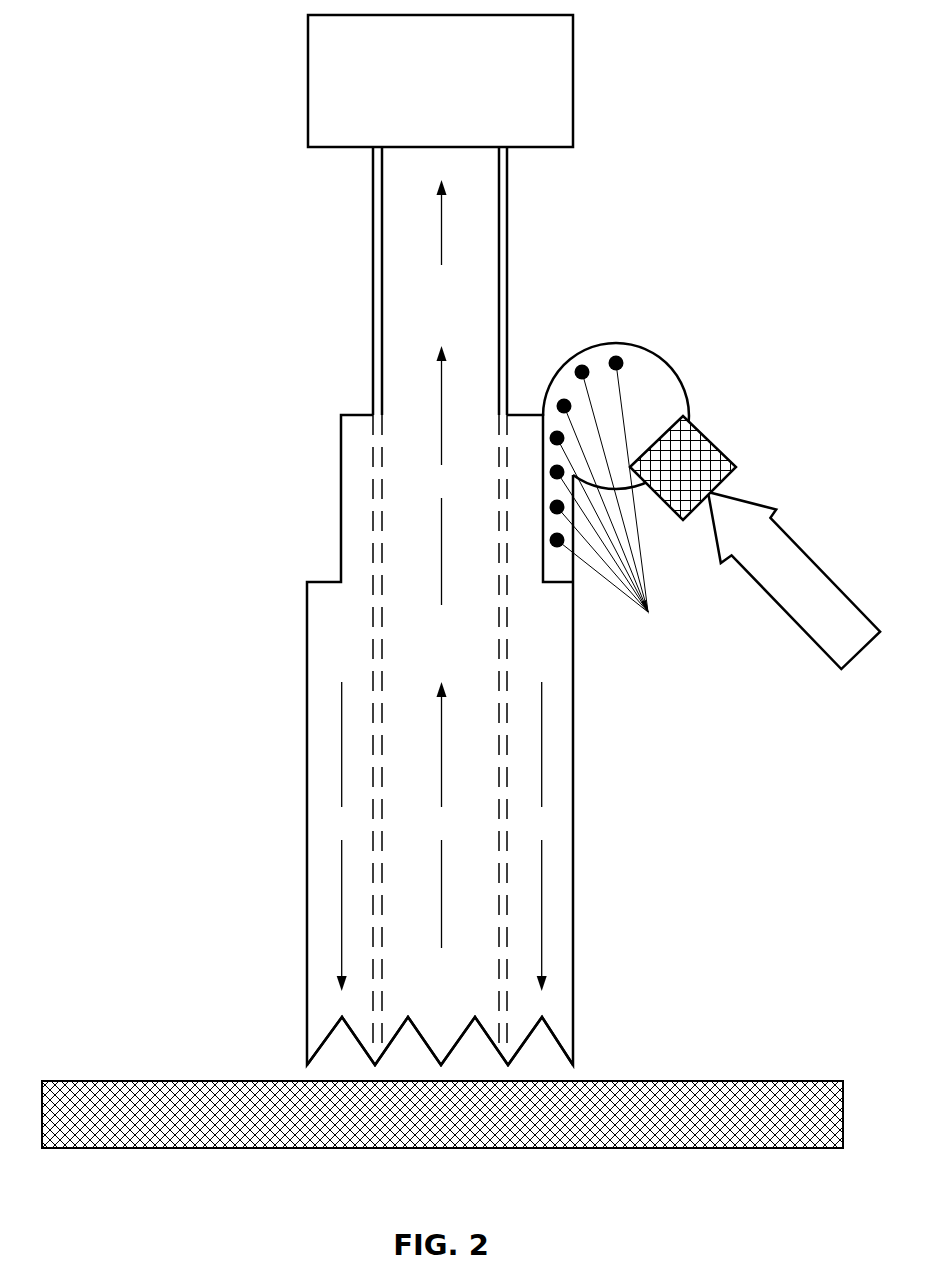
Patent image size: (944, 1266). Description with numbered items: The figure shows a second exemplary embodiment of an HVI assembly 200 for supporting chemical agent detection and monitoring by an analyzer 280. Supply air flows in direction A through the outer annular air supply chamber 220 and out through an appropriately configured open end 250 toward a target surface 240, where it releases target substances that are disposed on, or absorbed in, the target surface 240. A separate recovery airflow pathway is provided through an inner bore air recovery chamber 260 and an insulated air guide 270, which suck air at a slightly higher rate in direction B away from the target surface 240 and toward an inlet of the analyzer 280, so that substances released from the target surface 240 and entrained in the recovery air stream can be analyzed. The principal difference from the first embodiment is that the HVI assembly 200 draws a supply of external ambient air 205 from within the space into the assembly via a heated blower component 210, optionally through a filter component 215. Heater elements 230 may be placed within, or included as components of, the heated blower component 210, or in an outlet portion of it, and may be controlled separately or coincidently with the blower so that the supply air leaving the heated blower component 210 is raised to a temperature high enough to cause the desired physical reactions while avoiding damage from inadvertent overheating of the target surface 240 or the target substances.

The HVI assembly 200 is at (208, 93).
The external ambient air 205 is at (794, 580).
The heated blower component 210 is at (616, 445).
The filter component 215 is at (683, 468).
The outer annular air supply chamber 220 is at (441, 810).
The heater elements 230 is at (618, 504).
The target surface 240 is at (442, 1114).
The open end 250 is at (440, 1026).
The inner bore air recovery chamber 260 is at (442, 711).
The insulated air guide 270 is at (440, 306).
The analyzer 280 is at (440, 81).